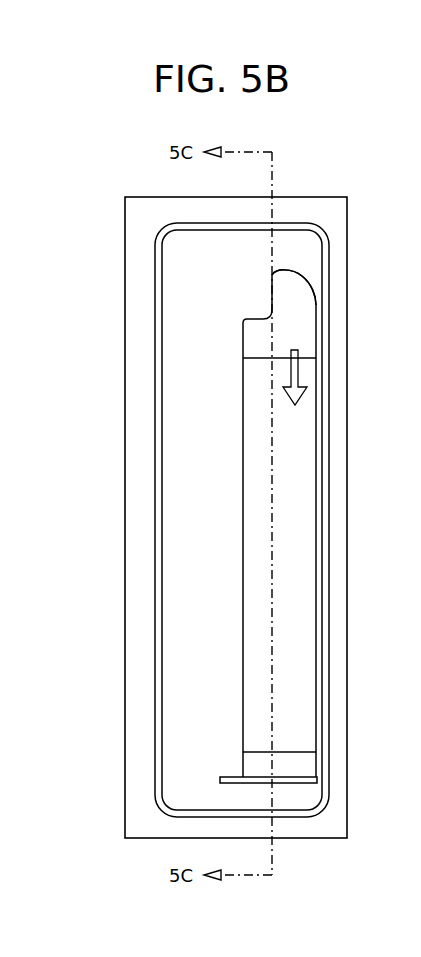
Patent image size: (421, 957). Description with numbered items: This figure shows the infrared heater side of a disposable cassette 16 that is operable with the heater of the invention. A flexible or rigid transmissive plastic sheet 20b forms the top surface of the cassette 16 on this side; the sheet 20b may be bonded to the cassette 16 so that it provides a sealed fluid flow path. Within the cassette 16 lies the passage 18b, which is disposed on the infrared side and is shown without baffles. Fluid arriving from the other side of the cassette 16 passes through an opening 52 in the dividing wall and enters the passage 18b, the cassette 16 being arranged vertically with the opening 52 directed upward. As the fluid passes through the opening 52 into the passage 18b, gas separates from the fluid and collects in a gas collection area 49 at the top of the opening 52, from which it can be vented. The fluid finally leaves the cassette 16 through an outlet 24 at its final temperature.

The cassette 16 is at (125, 228).
The transmissive plastic sheet 20b is at (190, 540).
The passage 18b is at (313, 540).
The gas collection area 49 is at (292, 283).
The opening 52 is at (306, 336).
The outlet 24 is at (230, 777).